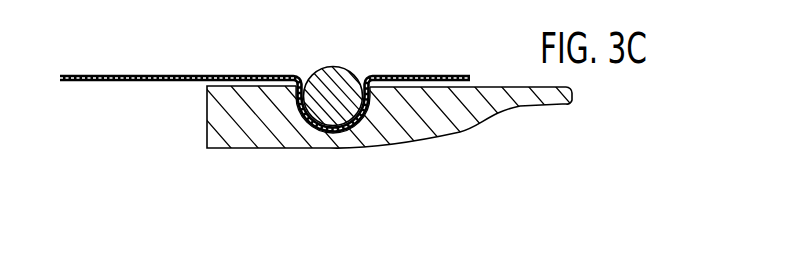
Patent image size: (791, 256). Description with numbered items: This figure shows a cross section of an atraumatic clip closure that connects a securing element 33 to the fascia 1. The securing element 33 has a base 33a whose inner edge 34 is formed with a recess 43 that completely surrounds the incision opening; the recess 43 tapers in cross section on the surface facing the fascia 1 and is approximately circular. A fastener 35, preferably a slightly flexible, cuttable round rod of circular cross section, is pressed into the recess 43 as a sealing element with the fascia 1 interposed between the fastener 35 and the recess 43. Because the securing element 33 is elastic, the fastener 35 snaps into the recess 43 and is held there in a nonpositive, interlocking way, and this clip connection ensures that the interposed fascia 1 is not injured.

The fascia 1 is at (98, 82).
The fastener 35 is at (342, 74).
The inner edge 34 is at (243, 128).
The recess 43 is at (310, 136).
The securing element 33 is at (491, 128).
The base 33a is at (562, 98).